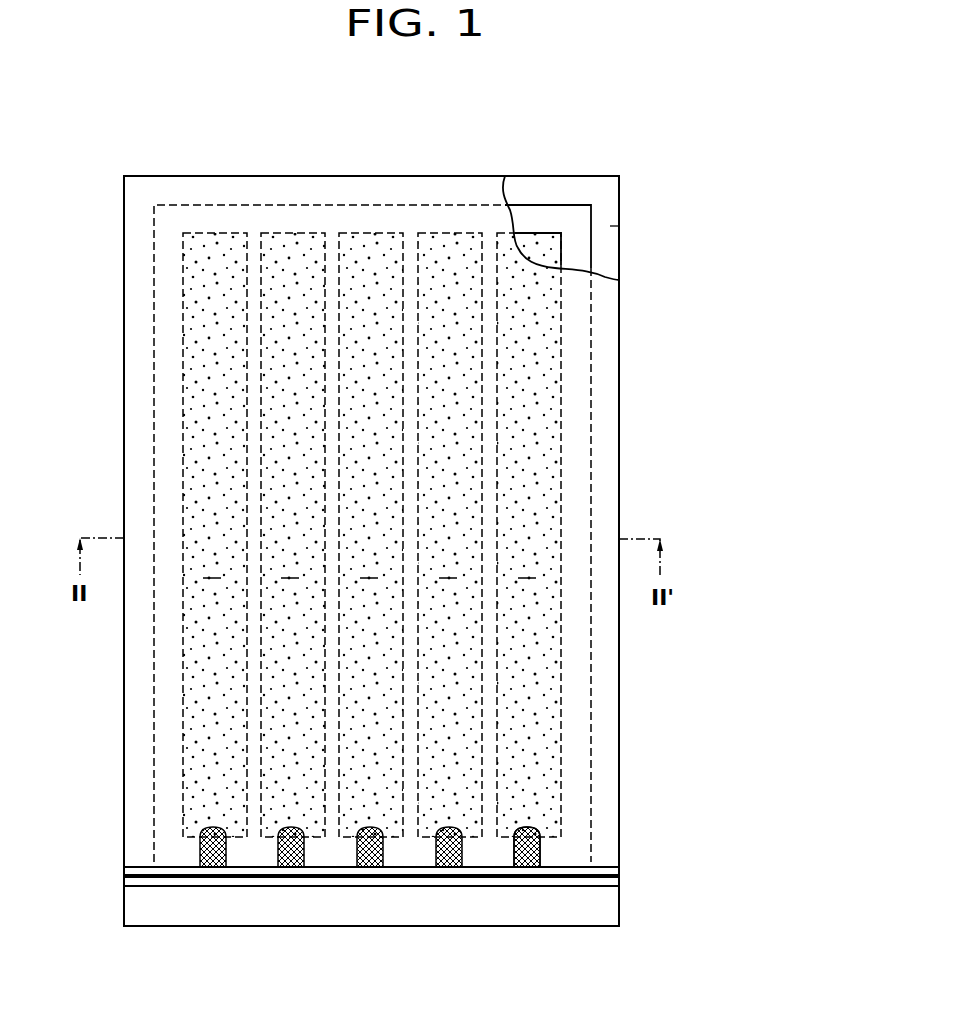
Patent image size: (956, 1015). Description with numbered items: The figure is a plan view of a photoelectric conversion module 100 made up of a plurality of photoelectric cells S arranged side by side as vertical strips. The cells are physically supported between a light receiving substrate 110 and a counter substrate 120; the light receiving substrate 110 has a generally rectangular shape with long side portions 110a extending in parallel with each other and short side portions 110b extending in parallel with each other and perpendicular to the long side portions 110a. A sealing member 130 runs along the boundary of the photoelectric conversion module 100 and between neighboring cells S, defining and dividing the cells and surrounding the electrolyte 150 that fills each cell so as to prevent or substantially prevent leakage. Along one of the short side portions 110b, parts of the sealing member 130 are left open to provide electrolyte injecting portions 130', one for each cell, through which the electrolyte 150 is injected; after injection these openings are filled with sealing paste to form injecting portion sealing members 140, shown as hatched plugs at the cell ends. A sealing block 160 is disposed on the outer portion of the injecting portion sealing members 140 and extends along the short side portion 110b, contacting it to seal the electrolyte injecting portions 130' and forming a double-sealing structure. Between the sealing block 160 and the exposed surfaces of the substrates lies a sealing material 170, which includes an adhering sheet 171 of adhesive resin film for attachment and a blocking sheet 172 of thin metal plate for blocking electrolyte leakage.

The photoelectric conversion module 100 is at (603, 160).
The light receiving substrate 110 is at (434, 188).
The long side portions 110a is at (124, 358).
The short side portions 110b is at (351, 176).
The counter substrate 120 is at (619, 226).
The sealing member 130 is at (429, 485).
The electrolyte injecting portions 130' is at (606, 836).
The injecting portion sealing members 140 is at (524, 867).
The electrolyte 150 is at (540, 380).
The sealing block 160 is at (612, 918).
The sealing material 170 is at (433, 872).
The adhering sheet 171 is at (612, 871).
The blocking sheet 172 is at (612, 879).